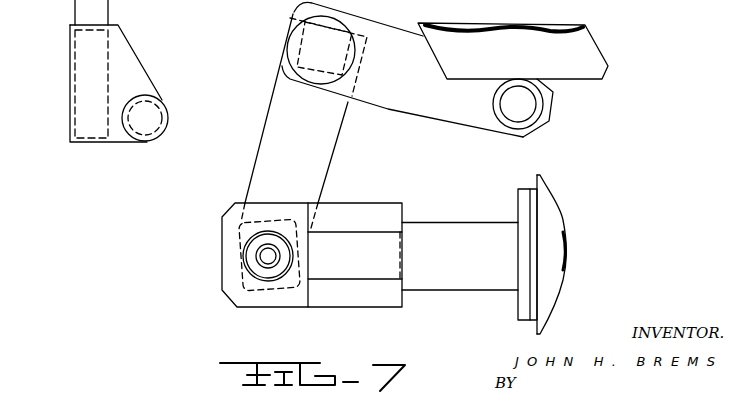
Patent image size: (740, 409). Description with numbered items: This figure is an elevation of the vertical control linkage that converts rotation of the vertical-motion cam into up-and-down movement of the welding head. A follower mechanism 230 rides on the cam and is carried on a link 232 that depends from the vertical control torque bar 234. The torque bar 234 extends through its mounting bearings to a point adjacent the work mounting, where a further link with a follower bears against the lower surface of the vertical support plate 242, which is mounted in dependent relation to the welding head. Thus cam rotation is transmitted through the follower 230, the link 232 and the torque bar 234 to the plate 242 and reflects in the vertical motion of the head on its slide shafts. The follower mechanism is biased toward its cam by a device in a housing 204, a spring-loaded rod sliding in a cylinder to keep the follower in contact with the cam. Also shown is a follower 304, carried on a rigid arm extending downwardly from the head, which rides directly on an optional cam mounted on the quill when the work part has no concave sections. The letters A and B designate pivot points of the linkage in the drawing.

The follower 304 is at (136, 89).
The pivot B is at (160, 117).
The vertical control torque bar 234 is at (333, 68).
The link 232 is at (323, 168).
The vertical support plate 242 is at (592, 58).
The hub A is at (538, 108).
The follower mechanism 230 is at (270, 272).
The housing 204 is at (552, 228).